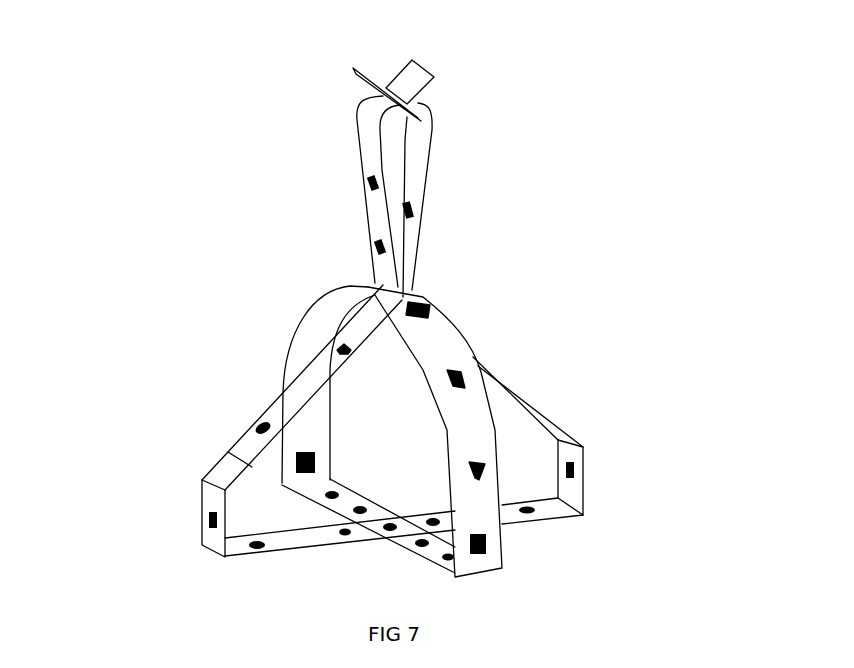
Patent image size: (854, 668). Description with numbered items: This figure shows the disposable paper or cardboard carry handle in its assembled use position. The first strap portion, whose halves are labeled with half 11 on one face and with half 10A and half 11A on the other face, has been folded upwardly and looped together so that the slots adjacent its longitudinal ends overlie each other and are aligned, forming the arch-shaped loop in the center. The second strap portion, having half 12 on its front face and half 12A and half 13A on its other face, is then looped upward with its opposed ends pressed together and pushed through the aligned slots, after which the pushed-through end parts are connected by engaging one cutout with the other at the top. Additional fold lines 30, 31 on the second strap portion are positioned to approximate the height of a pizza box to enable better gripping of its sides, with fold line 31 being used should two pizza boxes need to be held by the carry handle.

The first strap portion half (other side) 10A is at (306, 341).
The first strap portion half 11 is at (477, 417).
The first strap portion half (other side) 11A is at (425, 545).
The second strap portion front face half 12 is at (407, 77).
The second strap portion other face half 12A is at (325, 548).
The second strap portion other face half 13A is at (420, 172).
The fold line 30 is at (202, 490).
The fold line 31 is at (228, 453).